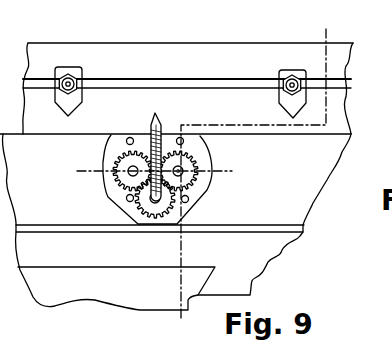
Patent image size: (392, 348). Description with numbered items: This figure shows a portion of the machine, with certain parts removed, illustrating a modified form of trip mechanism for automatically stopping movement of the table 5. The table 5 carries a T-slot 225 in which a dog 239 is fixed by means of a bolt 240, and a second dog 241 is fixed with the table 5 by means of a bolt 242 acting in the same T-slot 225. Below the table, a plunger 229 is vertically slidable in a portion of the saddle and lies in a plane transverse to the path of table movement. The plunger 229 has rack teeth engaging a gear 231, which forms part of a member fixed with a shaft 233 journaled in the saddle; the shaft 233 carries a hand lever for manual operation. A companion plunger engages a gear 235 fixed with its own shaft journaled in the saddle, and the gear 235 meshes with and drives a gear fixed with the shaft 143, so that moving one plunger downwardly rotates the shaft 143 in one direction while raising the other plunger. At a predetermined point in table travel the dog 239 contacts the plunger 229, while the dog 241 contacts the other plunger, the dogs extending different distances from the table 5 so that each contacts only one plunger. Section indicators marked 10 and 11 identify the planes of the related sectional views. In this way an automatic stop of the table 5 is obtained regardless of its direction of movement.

The table 5 is at (105, 43).
The T-slot 225 is at (203, 83).
The dog 239 is at (63, 67).
The bolt 240 is at (82, 70).
The dog 241 is at (293, 70).
The bolt 242 is at (300, 80).
The plunger 229 is at (165, 103).
The gear 235 is at (115, 157).
The gear 231 is at (194, 155).
The shaft 233 is at (185, 175).
The shaft 143 is at (153, 199).
The section line 10- 10 is at (232, 194).
The section line 11- 11 is at (153, 321).